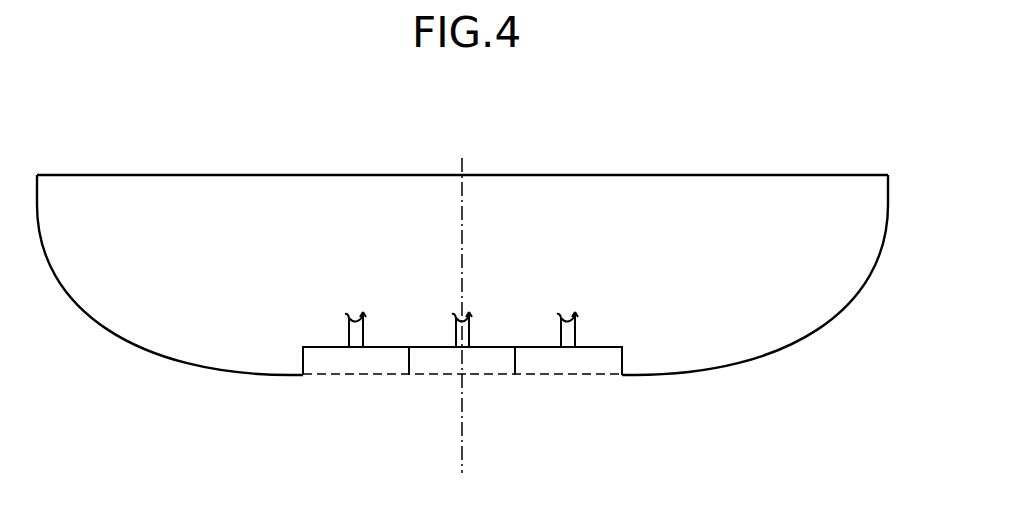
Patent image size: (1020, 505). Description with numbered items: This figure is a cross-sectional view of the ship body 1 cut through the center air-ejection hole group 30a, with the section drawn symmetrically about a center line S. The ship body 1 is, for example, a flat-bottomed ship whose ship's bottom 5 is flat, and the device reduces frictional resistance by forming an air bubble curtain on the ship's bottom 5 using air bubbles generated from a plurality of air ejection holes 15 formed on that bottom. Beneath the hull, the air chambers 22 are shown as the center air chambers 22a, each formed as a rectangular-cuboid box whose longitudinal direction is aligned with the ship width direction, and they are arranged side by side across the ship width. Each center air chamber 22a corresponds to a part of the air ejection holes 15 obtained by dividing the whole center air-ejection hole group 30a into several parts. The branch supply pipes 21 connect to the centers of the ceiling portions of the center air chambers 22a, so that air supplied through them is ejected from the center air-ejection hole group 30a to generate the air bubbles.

The ship body 1 is at (603, 175).
The center axis S is at (462, 158).
The branch supply pipes 21 is at (453, 330).
The air chambers 22 is at (462, 321).
The center air chambers 22a is at (496, 347).
The air ejection holes 15 is at (362, 376).
The ship's bottom 5 is at (553, 375).
The center air-ejection hole group 30a is at (320, 375).